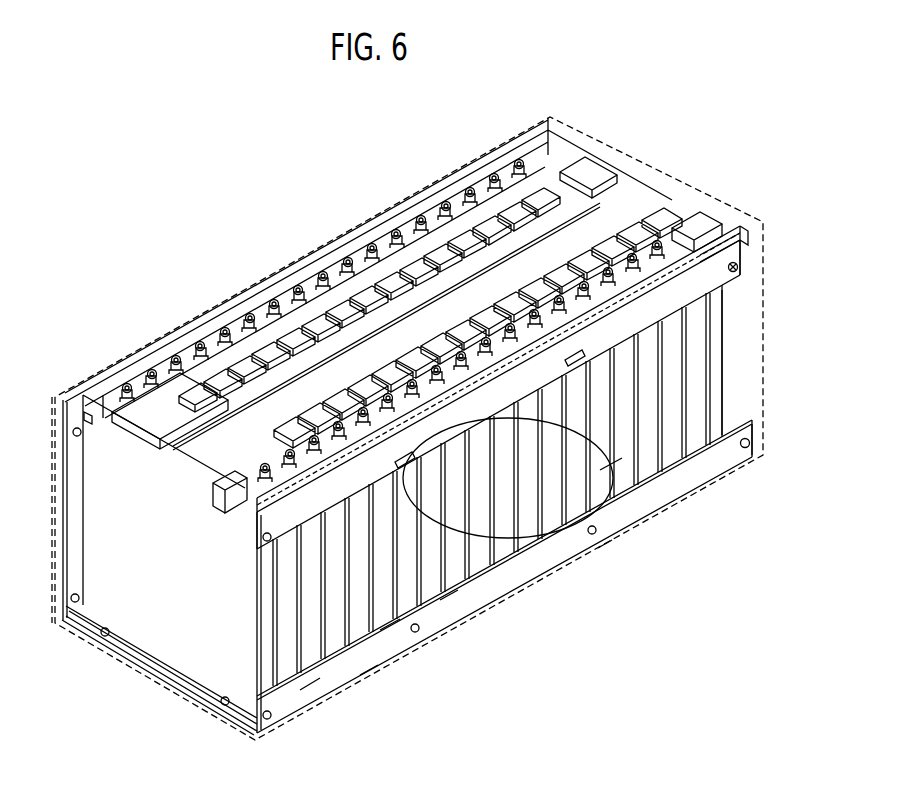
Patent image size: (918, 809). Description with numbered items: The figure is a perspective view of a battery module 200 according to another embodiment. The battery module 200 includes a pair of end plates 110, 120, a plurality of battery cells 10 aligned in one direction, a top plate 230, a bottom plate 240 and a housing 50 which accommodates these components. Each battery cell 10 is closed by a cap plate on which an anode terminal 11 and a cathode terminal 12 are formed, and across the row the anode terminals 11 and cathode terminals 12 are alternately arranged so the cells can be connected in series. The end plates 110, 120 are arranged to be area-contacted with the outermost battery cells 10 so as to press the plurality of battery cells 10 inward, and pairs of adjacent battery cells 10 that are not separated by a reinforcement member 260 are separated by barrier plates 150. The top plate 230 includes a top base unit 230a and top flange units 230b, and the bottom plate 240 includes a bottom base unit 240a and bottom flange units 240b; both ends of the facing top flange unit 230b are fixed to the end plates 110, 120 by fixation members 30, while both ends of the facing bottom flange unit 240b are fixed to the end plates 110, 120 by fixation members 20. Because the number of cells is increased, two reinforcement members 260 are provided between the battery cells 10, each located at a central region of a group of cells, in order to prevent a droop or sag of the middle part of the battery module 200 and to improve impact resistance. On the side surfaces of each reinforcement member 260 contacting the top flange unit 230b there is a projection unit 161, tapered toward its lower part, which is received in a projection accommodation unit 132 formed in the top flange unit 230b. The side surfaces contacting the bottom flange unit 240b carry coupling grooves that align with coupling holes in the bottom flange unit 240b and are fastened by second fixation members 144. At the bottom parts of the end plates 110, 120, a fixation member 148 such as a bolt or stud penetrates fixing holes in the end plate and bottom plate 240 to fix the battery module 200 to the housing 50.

The battery module 200 is at (148, 284).
The housing 50 is at (368, 215).
The anode terminal 11 is at (552, 152).
The cathode terminal 12 is at (688, 225).
The top base unit 230a is at (730, 222).
The top flange unit 230b is at (744, 262).
The top plate 230 is at (806, 168).
The fixation member 30 is at (740, 268).
The end plate 120 is at (723, 363).
The fixation member 20 is at (750, 444).
The battery cell 10 is at (653, 458).
The projection accommodation unit 132 is at (612, 478).
The reinforcement member 260 is at (597, 537).
The projection unit 161 is at (560, 535).
The second fixation member 144 is at (600, 545).
The bottom base unit 240a is at (373, 670).
The bottom flange unit 240b is at (398, 643).
The bottom plate 240 is at (486, 708).
The barrier plate 150 is at (313, 660).
The end plate 110 is at (165, 616).
The fixation member 148 is at (86, 418).